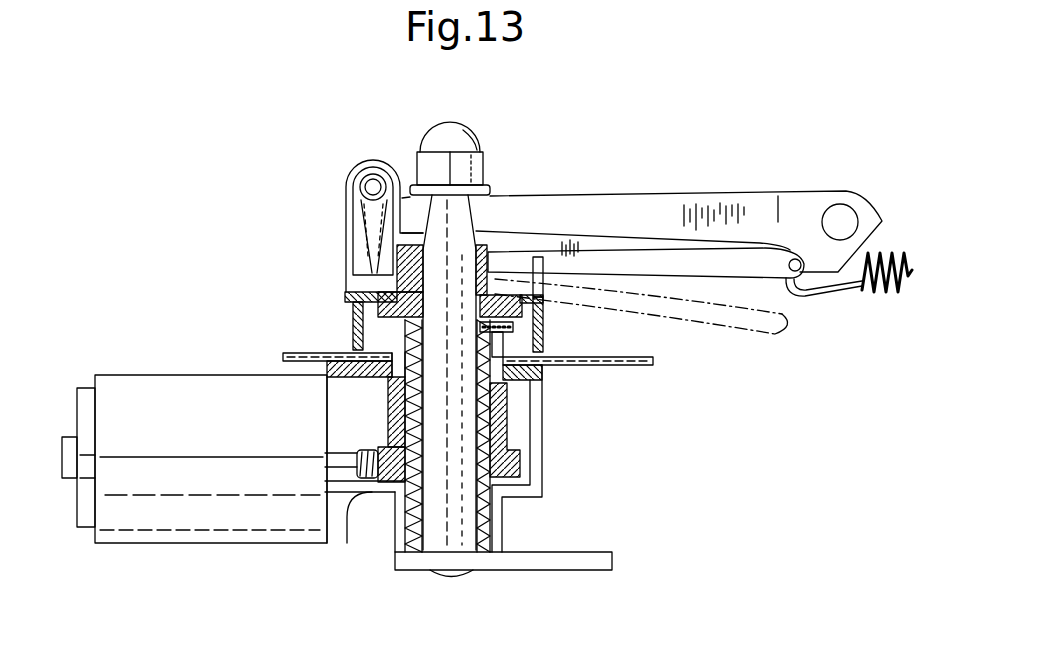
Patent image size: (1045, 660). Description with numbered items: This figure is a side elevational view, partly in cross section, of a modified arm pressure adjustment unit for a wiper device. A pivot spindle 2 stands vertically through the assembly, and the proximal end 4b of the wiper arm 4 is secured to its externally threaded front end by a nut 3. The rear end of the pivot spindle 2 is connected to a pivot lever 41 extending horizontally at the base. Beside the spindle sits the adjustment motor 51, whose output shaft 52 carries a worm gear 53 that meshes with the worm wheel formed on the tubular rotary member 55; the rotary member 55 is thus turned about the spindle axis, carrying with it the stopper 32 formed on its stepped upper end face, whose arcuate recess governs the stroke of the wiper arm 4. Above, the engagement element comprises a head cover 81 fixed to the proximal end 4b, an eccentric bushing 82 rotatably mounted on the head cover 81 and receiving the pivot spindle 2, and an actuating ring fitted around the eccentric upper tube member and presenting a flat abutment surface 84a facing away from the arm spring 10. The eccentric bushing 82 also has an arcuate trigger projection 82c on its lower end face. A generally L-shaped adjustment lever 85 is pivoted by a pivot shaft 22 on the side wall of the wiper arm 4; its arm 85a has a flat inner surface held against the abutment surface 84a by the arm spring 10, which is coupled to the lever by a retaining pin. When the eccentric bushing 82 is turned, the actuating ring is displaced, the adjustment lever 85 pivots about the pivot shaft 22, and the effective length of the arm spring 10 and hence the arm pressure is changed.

The pivot spindle 2 is at (421, 548).
The nut 3 is at (471, 134).
The wiper arm 4 is at (690, 200).
The proximal end of wiper arm 4b is at (347, 202).
The arm spring 10 is at (839, 297).
The pivot shaft 22 is at (376, 181).
The stopper 32 is at (488, 340).
The pivot lever 41 is at (560, 560).
The adjustment motor 51 is at (196, 532).
The output shaft 52 is at (346, 468).
The worm gear 53 is at (368, 482).
The tubular rotary member 55 is at (505, 405).
The head cover 81 is at (346, 297).
The eccentric bushing 82 is at (356, 315).
The arcuate trigger projection 82c is at (513, 328).
The flat abutment surface 84a is at (398, 270).
The adjustment lever 85 is at (712, 258).
The arm of adjustment lever 85a is at (365, 222).